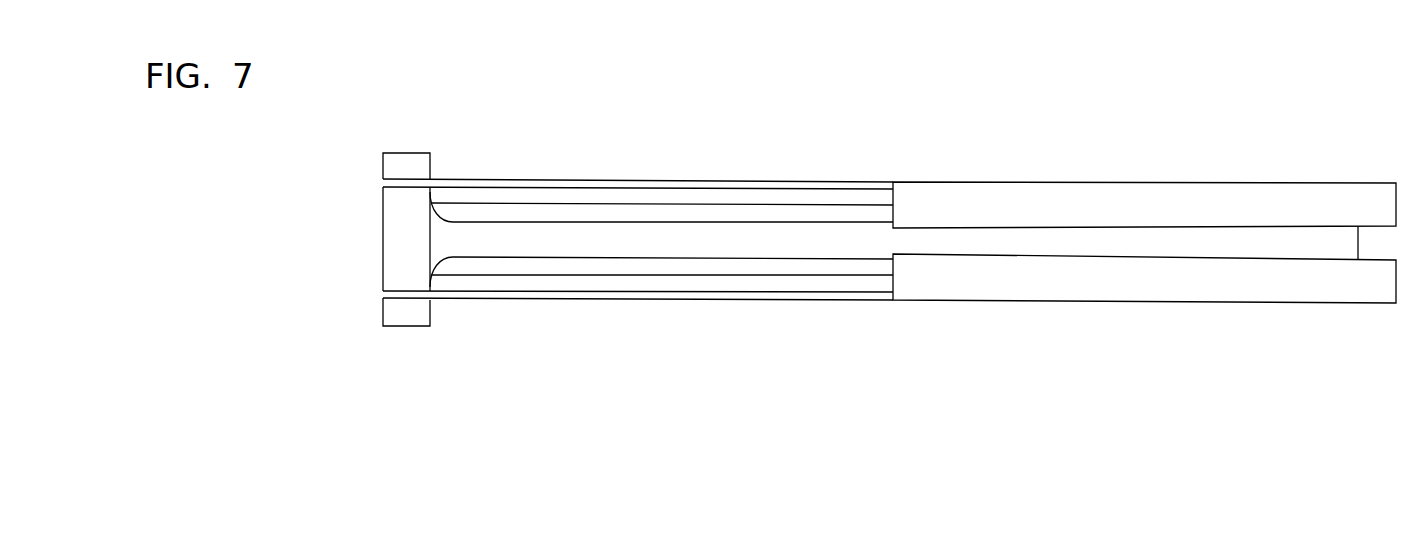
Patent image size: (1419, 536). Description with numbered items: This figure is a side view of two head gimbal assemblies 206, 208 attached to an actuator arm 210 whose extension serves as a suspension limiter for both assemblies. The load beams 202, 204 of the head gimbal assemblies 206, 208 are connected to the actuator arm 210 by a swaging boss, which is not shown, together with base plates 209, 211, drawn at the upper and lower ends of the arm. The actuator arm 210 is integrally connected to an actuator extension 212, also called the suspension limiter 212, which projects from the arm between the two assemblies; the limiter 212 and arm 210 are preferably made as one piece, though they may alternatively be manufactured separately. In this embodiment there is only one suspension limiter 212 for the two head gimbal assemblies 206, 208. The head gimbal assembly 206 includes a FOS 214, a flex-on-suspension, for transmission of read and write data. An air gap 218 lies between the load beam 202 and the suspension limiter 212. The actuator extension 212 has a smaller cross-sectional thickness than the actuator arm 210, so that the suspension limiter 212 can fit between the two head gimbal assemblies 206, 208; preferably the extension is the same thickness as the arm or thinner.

The load beam 202 is at (710, 181).
The load beam 204 is at (683, 298).
The head gimbal assembly 206 is at (798, 180).
The head gimbal assembly 208 is at (807, 300).
The base plate 209 is at (407, 165).
The actuator arm 210 is at (405, 230).
The base plate 211 is at (407, 308).
The actuator extension (suspension limiter) 212 is at (842, 238).
The FOS 214 is at (489, 194).
The air gap 218 is at (608, 210).